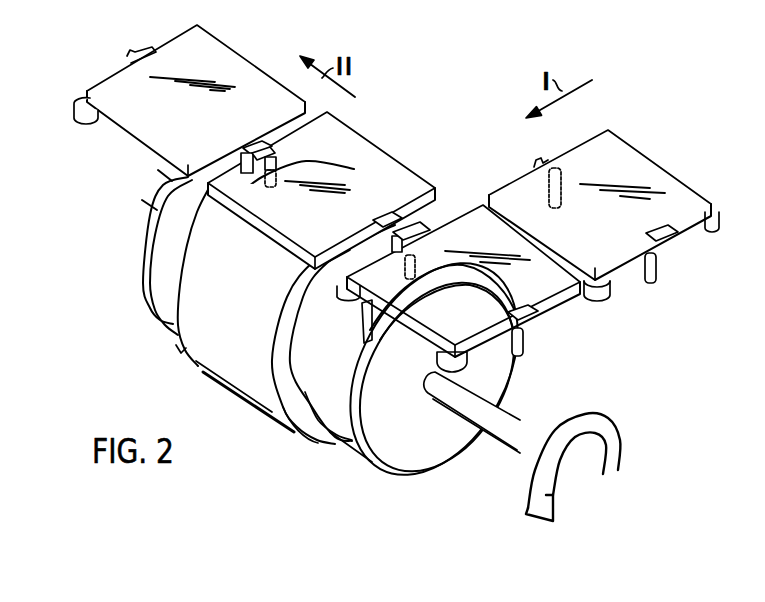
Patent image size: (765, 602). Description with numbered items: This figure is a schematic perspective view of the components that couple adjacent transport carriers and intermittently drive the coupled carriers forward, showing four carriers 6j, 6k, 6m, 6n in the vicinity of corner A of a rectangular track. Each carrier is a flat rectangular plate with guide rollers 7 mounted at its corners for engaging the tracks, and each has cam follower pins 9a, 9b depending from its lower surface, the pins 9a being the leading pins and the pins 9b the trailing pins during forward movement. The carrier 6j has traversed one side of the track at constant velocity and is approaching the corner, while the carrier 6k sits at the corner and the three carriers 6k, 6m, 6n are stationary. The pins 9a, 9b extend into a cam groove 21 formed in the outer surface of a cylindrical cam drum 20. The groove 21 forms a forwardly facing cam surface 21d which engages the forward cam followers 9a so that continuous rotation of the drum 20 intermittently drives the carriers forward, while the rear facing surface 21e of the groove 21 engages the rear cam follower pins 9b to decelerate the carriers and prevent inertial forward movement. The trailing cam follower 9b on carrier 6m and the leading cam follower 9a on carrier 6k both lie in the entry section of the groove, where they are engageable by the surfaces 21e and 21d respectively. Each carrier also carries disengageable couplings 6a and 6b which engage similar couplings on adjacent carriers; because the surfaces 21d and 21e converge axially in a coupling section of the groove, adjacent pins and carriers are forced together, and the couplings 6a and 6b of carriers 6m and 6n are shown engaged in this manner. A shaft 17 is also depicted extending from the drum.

The carrier 6n is at (214, 60).
The carrier 6m is at (367, 152).
The carrier 6k is at (567, 308).
The carrier 6j is at (645, 168).
The disengageable coupling 6a is at (250, 138).
The disengageable coupling 6b is at (250, 153).
The guide roller 7 is at (605, 290).
The leading cam follower pin 9a is at (278, 158).
The trailing cam follower pin 9b is at (525, 345).
The shaft 17 is at (512, 428).
The cylindrical cam drum 20 is at (223, 368).
The cam groove 21 is at (334, 398).
The forwardly facing cam surface 21d is at (499, 260).
The rear facing surface 21e is at (298, 433).